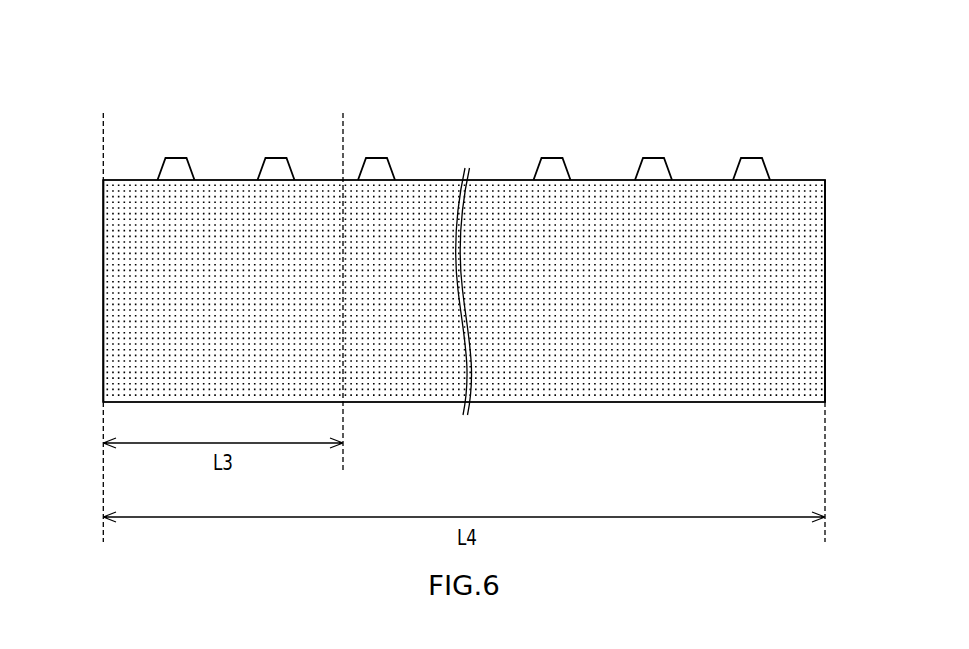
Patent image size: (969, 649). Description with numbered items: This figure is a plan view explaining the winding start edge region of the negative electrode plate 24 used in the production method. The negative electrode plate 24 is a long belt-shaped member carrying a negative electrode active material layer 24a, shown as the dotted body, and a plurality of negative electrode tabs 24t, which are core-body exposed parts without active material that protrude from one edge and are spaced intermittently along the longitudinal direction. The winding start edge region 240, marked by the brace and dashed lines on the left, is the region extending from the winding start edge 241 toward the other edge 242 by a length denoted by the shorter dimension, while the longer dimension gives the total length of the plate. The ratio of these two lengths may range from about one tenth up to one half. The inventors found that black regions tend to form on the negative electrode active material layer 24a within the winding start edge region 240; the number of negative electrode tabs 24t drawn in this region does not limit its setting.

The negative electrode plate 24 is at (97, 41).
The negative electrode active material layer 24a is at (808, 219).
The negative electrode tab 24t is at (381, 158).
The winding start edge region 240 is at (343, 113).
The winding start edge 241 is at (103, 330).
The other edge 242 is at (825, 330).